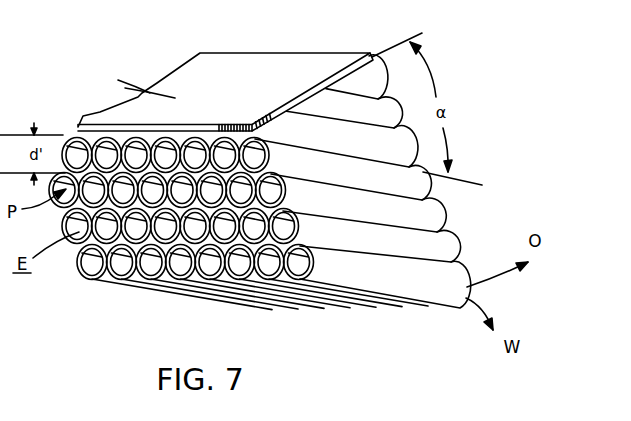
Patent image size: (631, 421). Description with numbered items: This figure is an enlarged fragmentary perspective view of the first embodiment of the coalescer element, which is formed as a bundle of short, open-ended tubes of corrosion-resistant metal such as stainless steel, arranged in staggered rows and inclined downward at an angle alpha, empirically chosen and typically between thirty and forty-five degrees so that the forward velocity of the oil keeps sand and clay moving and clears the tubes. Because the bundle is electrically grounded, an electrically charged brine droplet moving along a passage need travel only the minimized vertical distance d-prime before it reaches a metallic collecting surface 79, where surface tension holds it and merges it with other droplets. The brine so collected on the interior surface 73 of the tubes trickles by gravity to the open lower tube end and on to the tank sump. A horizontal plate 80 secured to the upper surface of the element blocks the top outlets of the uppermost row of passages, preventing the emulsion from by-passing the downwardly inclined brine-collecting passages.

The metallic collecting surface 79 is at (79, 162).
The interior surface of the tubes 73 is at (95, 264).
The horizontal plate 80 is at (192, 78).